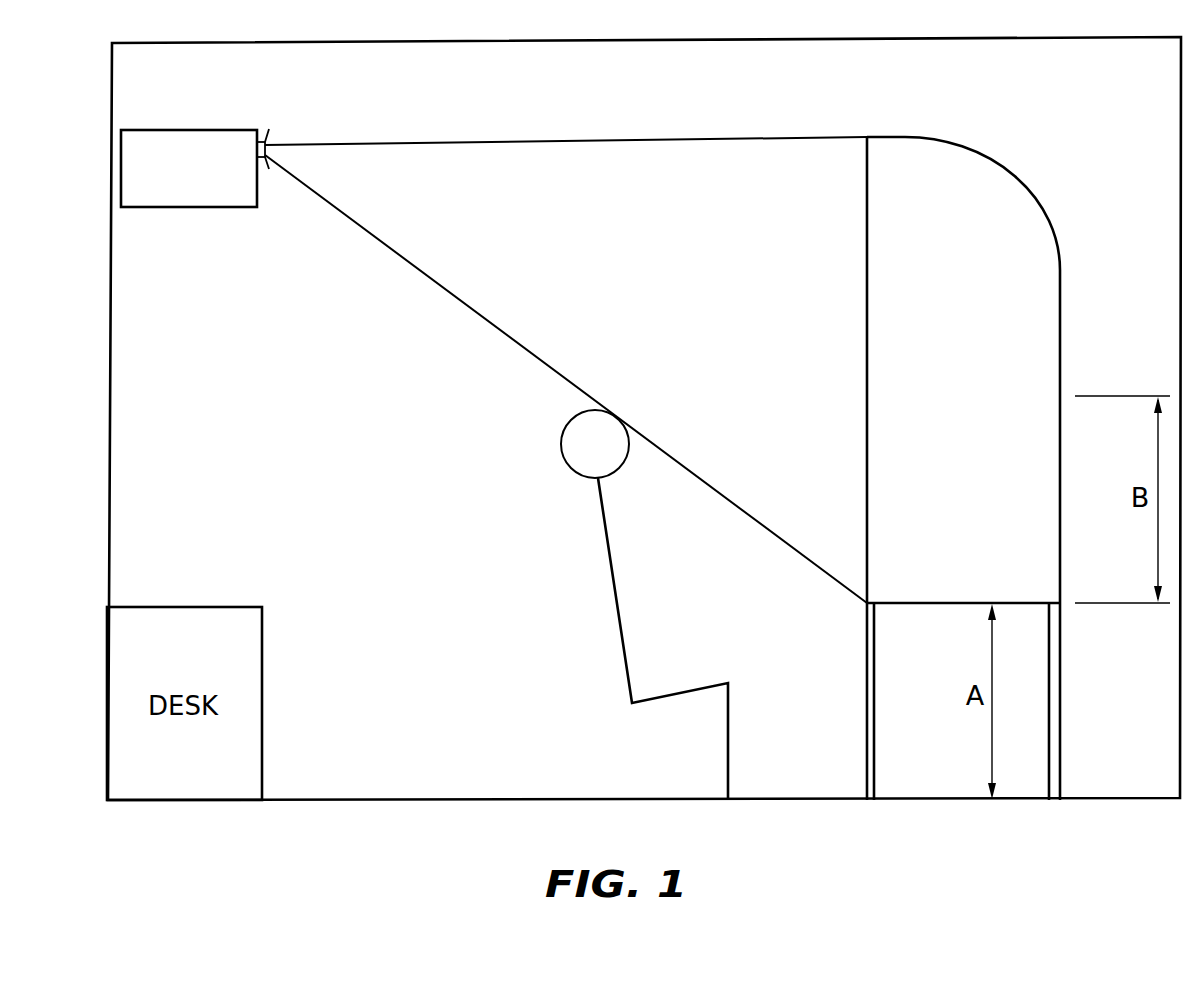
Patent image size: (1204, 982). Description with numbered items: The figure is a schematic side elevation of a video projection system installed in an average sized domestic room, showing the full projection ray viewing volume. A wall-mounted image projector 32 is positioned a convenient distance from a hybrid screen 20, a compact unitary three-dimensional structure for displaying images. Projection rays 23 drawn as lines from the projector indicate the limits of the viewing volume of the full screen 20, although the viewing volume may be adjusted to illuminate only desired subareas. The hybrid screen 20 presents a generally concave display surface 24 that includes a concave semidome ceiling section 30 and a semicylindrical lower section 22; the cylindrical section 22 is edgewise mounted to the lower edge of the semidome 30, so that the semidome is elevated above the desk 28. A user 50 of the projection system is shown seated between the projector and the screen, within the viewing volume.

The hybrid screen 20 is at (1082, 168).
The semicylindrical lower section 22 is at (1061, 537).
The projection rays 23 is at (540, 140).
The concave display surface 24 is at (838, 367).
The desk 28 is at (1061, 690).
The concave semidome ceiling section 30 is at (968, 142).
The image projector 32 is at (195, 130).
The user 50 is at (617, 588).